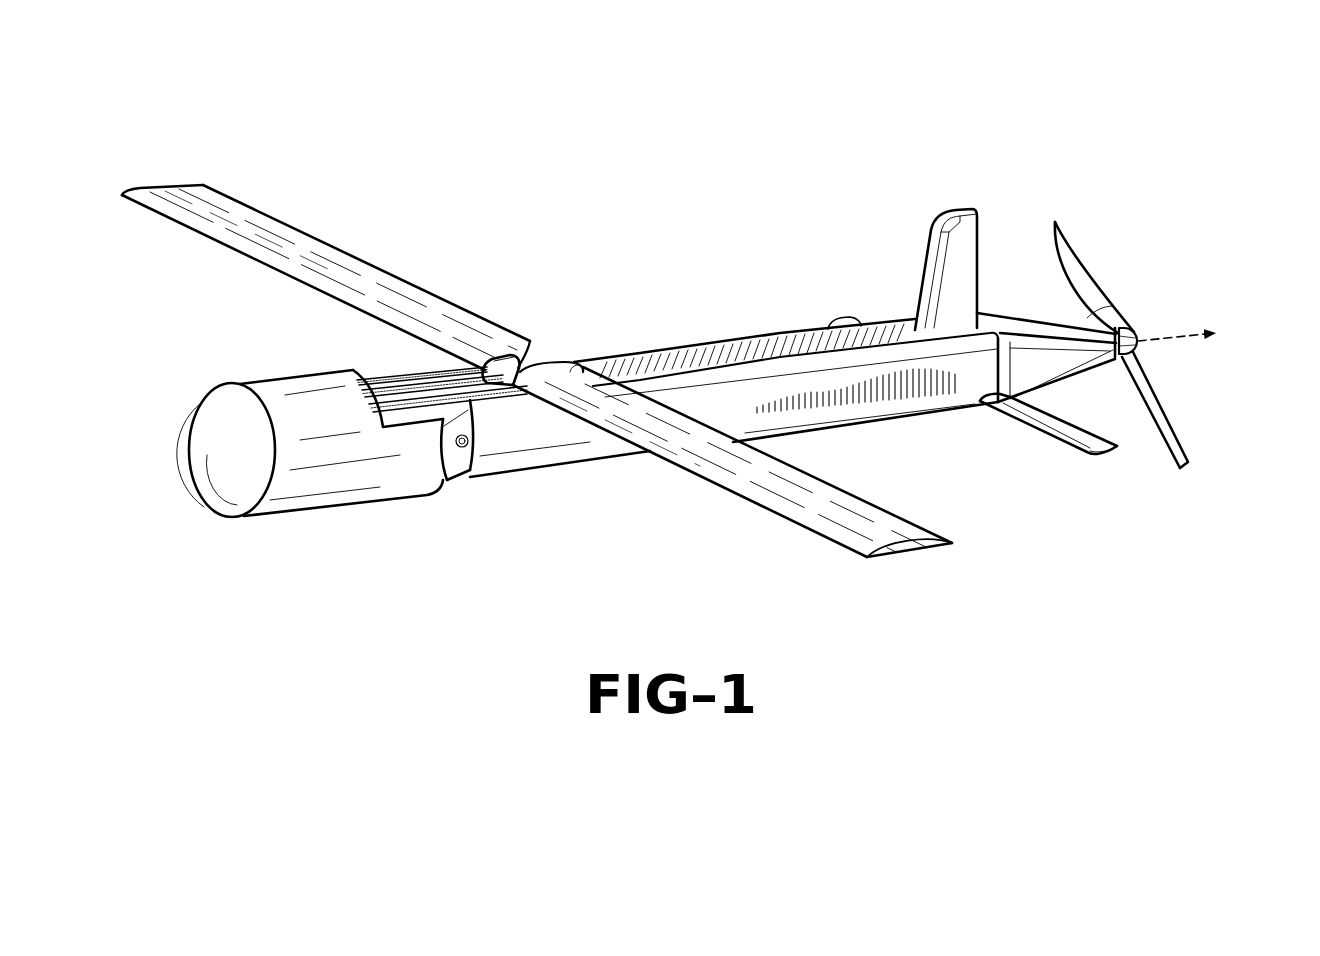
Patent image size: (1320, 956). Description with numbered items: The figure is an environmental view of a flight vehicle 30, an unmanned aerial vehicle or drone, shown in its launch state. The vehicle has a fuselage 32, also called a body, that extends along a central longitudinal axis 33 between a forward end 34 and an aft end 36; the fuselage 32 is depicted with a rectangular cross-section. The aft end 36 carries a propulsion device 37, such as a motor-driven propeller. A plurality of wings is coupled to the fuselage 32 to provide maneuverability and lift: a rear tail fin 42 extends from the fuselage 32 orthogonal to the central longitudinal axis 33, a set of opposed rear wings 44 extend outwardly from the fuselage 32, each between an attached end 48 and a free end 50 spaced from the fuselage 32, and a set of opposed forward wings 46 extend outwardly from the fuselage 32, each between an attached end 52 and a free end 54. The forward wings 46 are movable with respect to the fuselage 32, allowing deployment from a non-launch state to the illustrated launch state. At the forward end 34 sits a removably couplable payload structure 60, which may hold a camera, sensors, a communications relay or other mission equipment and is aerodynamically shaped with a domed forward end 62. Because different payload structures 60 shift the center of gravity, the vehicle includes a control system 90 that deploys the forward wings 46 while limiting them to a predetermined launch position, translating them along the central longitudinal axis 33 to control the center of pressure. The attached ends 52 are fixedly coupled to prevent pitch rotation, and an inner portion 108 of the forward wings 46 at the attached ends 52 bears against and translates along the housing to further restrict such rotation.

The flight vehicle 30 is at (697, 140).
The fuselage 32 is at (780, 353).
The central longitudinal axis 33 is at (1167, 343).
The forward end 34 is at (562, 465).
The aft end 36 is at (1016, 307).
The propulsion device 37 is at (1131, 320).
The rear tail fin 42 is at (936, 257).
The rear wings 44 is at (1065, 476).
The forward wings 46 is at (537, 403).
The attached end 48 is at (1002, 419).
The free end 50 is at (1082, 456).
The attached end 52 is at (601, 410).
The free end 54 is at (872, 541).
The payload structure 60 is at (324, 459).
The domed forward end 62 is at (207, 430).
The control system 90 is at (496, 356).
The inner portion 108 is at (554, 389).